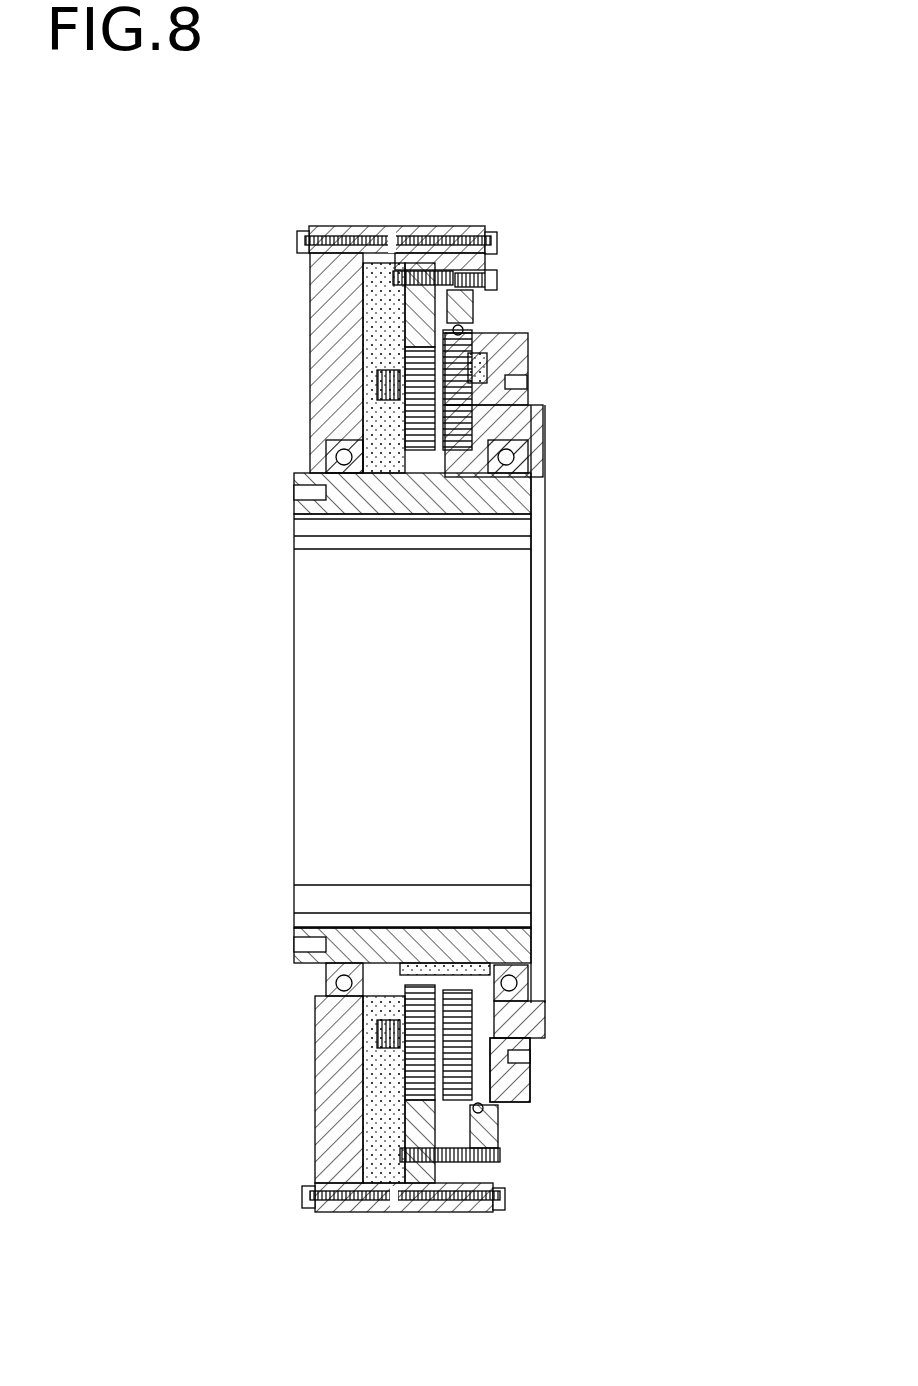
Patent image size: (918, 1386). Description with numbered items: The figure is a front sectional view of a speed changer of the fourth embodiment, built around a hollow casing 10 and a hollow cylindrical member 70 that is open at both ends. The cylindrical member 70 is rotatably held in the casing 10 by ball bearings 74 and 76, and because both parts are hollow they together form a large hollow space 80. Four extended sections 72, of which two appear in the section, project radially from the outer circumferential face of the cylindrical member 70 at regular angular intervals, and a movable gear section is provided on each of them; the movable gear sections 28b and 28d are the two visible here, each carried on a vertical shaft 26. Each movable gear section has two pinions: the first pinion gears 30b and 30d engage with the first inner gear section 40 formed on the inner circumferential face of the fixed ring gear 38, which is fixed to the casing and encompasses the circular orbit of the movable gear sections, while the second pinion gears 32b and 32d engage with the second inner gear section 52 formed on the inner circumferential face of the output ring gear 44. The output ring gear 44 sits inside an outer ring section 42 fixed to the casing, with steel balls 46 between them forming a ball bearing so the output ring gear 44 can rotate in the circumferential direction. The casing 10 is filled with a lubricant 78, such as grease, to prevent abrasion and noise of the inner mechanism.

The casing 10 is at (343, 226).
The outer ring section 42 is at (458, 283).
The steel balls 46 is at (485, 323).
The second inner gear section 52 is at (474, 344).
The movable gear section 28b is at (475, 377).
The vertical shaft 26 is at (487, 401).
The ball bearing 76 is at (517, 458).
The second pinion gear 32b is at (423, 417).
The hollow space 80 is at (418, 705).
The second pinion gear 32d is at (450, 1040).
The movable gear section 28d is at (500, 1008).
The output ring gear 44 is at (507, 1122).
The lubricant 78 is at (380, 313).
The extended section 72 is at (390, 405).
The ball bearing 74 is at (340, 455).
The first pinion gear 30b is at (400, 468).
The cylindrical member 70 is at (292, 942).
The first pinion gear 30d is at (400, 1003).
The first inner gear section 40 is at (408, 1117).
The fixed ring gear 38 is at (340, 1214).